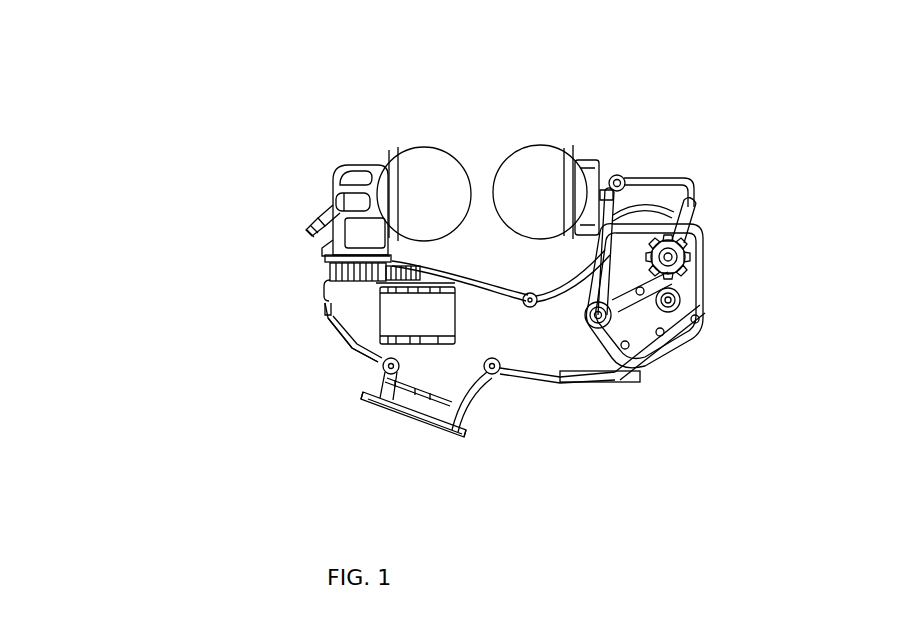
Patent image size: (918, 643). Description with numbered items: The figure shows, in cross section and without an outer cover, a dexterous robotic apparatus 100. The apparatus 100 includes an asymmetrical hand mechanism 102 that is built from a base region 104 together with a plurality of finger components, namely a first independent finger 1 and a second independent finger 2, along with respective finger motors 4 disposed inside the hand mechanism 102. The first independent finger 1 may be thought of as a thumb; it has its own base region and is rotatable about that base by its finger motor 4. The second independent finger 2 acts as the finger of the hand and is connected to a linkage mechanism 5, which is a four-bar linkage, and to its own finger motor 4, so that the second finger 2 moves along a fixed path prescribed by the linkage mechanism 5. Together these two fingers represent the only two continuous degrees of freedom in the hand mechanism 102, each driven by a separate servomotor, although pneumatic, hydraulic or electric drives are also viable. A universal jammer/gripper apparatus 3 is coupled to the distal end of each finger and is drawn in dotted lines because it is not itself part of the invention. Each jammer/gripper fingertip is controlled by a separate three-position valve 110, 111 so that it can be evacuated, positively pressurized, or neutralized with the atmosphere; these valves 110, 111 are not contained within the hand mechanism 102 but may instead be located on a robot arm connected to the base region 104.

The dexterous robotic apparatus 100 is at (647, 60).
The first independent finger 1 is at (330, 170).
The second independent finger 2 is at (666, 170).
The universal jammer/gripper apparatus 3 is at (455, 145).
The finger motor 4 is at (437, 322).
The linkage mechanism 5 is at (676, 224).
The asymmetrical hand mechanism 102 is at (327, 318).
The base region 104 is at (392, 406).
The 3-position valve 110 is at (317, 188).
The 3-position valve 111 is at (410, 166).